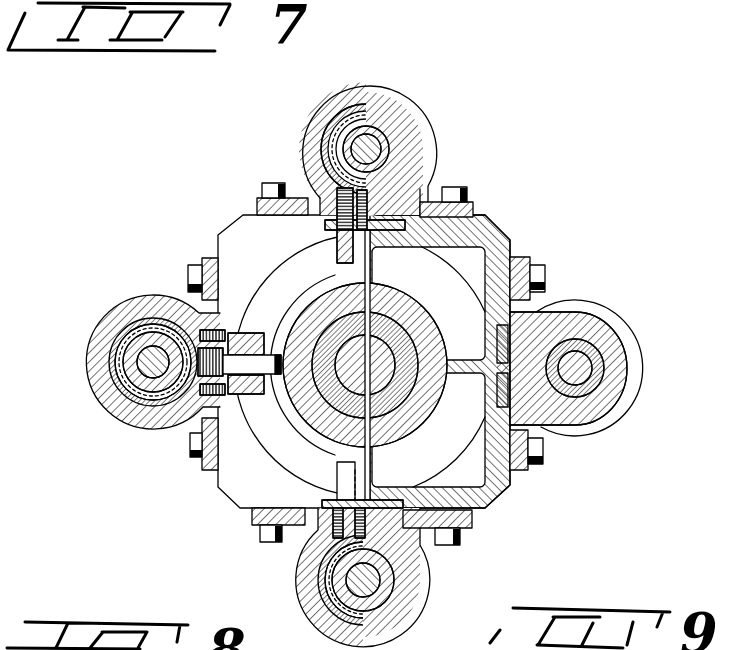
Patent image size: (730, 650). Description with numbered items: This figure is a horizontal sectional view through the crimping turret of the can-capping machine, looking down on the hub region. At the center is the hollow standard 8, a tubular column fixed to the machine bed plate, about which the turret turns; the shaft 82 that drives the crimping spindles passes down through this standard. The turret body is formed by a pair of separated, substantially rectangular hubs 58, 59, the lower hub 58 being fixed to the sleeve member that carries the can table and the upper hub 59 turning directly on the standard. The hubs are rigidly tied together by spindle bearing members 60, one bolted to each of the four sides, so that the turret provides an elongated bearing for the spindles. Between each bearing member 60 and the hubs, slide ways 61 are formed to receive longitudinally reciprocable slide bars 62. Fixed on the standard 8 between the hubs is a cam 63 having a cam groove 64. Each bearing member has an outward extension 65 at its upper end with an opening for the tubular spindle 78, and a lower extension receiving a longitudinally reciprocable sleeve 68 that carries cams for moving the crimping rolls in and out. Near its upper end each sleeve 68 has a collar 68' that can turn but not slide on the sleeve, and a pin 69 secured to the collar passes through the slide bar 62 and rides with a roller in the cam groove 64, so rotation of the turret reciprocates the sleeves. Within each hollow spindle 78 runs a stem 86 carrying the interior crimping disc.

The hollow standard 8 is at (340, 320).
The lower hub 58 is at (242, 226).
The upper hub 59 is at (503, 234).
The spindle bearing members 60 is at (207, 260).
The slide ways 61 is at (496, 336).
The slide bars 62 is at (236, 332).
The cam 63 is at (275, 275).
The cam groove 64 is at (283, 440).
The upper extension of spindle bearing member 65 is at (585, 315).
The longitudinally reciprocable sleeve 68 is at (286, 529).
The collar 68' is at (386, 259).
The pin or stub shaft 69 is at (335, 246).
The tubular spindle 78 is at (128, 378).
The shaft 82 is at (380, 345).
The stem 86 is at (583, 371).